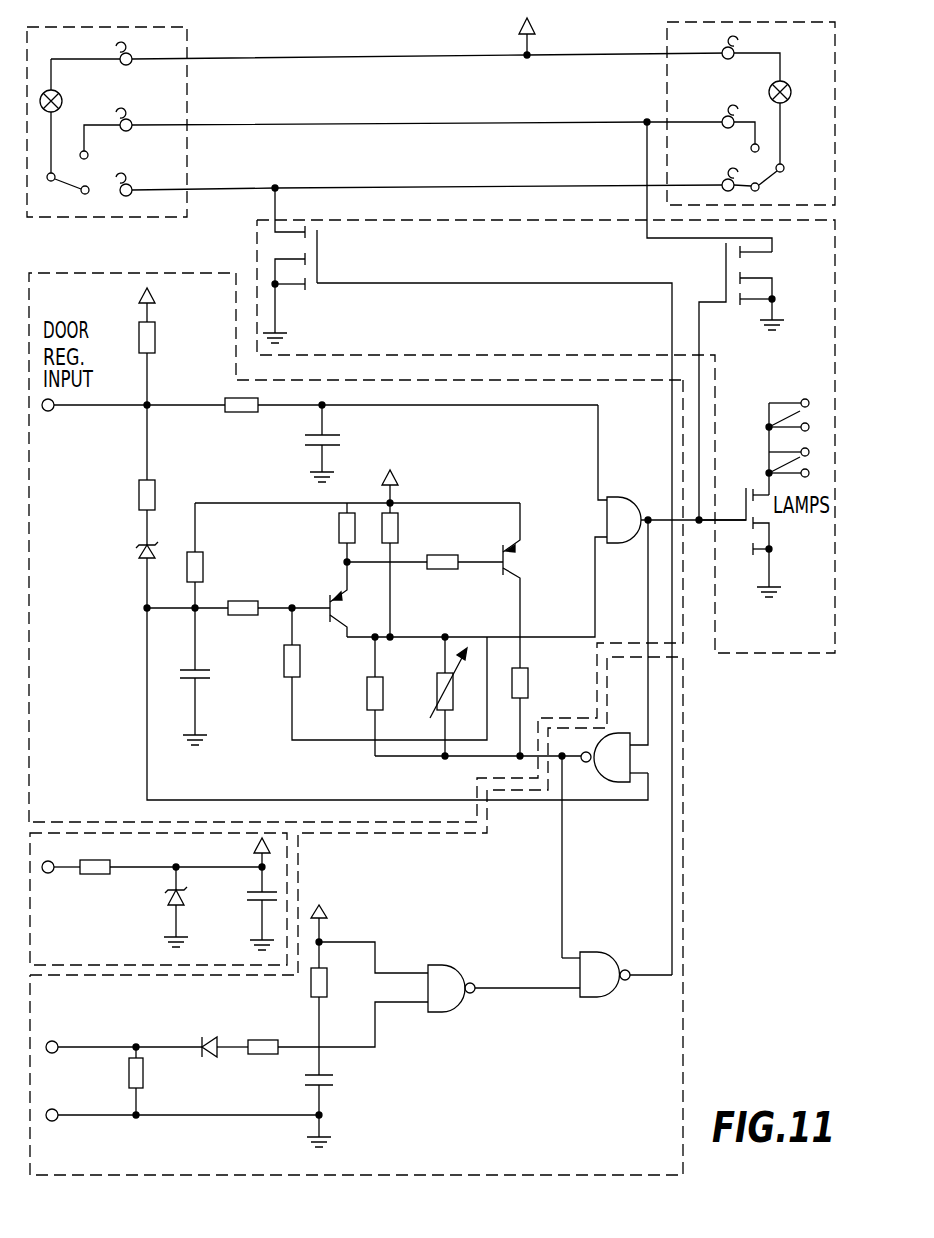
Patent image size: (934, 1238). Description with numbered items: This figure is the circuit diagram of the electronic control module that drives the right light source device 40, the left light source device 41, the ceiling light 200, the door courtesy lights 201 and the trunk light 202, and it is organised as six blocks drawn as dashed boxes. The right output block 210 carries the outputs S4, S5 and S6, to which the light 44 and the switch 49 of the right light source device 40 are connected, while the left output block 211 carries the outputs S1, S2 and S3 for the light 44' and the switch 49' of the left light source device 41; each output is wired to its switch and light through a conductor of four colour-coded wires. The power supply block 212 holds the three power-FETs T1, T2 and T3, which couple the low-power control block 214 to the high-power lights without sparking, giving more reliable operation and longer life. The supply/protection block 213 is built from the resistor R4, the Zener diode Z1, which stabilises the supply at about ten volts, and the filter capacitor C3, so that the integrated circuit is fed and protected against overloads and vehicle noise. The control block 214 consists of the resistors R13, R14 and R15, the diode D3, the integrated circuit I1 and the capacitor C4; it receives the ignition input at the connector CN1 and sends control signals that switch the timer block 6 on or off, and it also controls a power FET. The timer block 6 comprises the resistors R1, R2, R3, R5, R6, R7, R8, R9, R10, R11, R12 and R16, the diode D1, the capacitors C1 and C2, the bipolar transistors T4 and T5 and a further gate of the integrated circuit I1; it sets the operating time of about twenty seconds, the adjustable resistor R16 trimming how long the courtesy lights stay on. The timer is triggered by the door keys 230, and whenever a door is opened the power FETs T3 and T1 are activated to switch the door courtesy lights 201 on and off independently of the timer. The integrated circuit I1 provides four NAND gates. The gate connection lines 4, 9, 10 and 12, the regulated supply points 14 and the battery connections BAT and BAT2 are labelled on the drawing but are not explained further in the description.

The output signal line of NAND gate 4 is at (474, 984).
The timer block 6 is at (684, 633).
The input line of NAND gate 9 is at (580, 998).
The output line of NAND gate 10 is at (627, 970).
The NAND gate output line 12 is at (606, 505).
The regulated supply voltage terminal 14 is at (326, 905).
The right light source device 40 is at (666, 43).
The left light source device 41 is at (205, 50).
The light 44 is at (799, 97).
The light 44' is at (71, 116).
The switch 49 is at (787, 179).
The switch 49' is at (59, 195).
The ceiling light 200 is at (802, 400).
The door courtesy lights 201 is at (769, 460).
The trunk light 202 is at (769, 420).
The right output circuit block 210 is at (667, 203).
The left output circuit block 211 is at (88, 224).
The power supply block 212 is at (546, 220).
The supply/protection block 213 is at (88, 822).
The control block 214 is at (691, 1038).
The door keys 230 is at (49, 412).
The output S1 is at (136, 48).
The output S2 is at (118, 128).
The output S3 is at (136, 179).
The output S4 is at (714, 40).
The output S5 is at (714, 109).
The output S6 is at (714, 172).
The power-FET T1 is at (770, 279).
The power-FET T2 is at (325, 279).
The power-FET T3 is at (767, 528).
The bipolar transistor T4 is at (340, 605).
The bipolar transistor T5 is at (512, 560).
The resistor R1 is at (156, 341).
The resistor R2 is at (236, 413).
The resistor R3 is at (139, 496).
The resistor R4 is at (108, 861).
The resistor R5 is at (236, 548).
The resistor R6 is at (232, 601).
The resistor R7 is at (300, 681).
The resistor R8 is at (339, 528).
The resistor R9 is at (399, 548).
The resistor R10 is at (367, 690).
The resistor R11 is at (446, 556).
The resistor R12 is at (528, 681).
The resistor R13 is at (263, 1040).
The resistor R14 is at (328, 992).
The resistor R15 is at (144, 1072).
The adjustment resistor R16 is at (437, 690).
The capacitor C1 is at (340, 441).
The capacitor C2 is at (212, 680).
The filter capacitor C3 is at (247, 906).
The capacitor C4 is at (340, 1085).
The signal diode D1 is at (139, 552).
The signal diode D3 is at (217, 1038).
The Zener diode Z1 is at (167, 900).
The integrated circuit I1 is at (626, 514).
The ignition input connector CN1 is at (175, 1007).
The battery supply BAT is at (549, 35).
The battery supply BAT2 is at (169, 302).